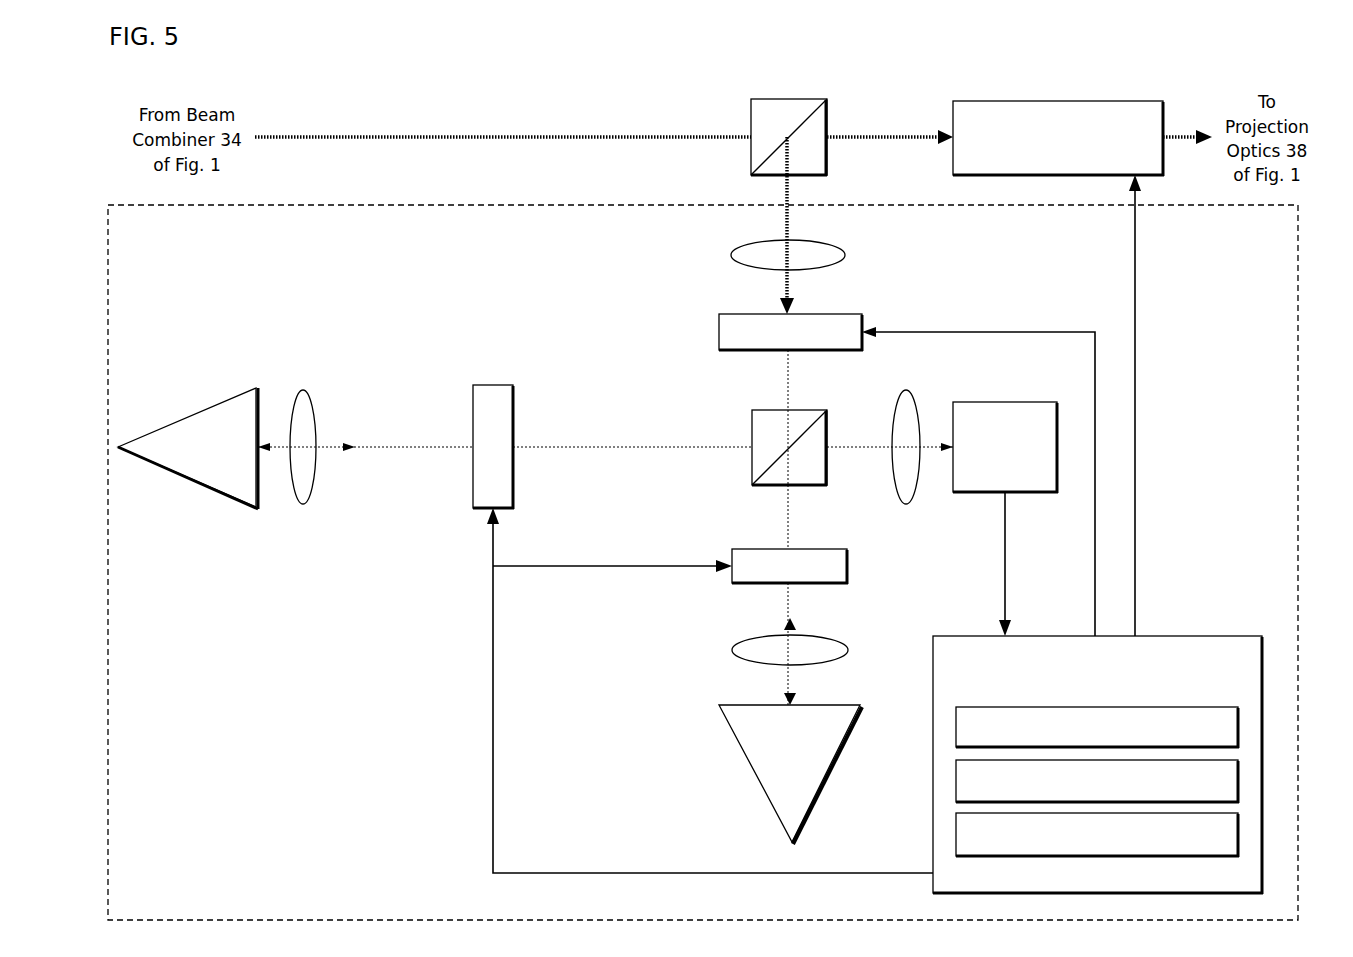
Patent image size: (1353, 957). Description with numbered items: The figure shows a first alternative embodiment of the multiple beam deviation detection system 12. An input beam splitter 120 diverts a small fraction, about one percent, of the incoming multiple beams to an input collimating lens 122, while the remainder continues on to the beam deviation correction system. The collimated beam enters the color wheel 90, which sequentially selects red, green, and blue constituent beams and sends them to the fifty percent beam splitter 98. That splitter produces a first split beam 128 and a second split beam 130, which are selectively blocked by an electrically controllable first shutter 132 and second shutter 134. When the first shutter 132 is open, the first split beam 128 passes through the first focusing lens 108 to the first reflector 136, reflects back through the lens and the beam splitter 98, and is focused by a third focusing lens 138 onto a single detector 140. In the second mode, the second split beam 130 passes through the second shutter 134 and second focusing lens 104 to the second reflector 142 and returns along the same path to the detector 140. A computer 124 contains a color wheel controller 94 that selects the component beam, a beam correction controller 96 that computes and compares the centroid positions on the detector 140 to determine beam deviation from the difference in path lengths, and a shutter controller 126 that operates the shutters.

The multiple beam deviation detection system 12 is at (398, 200).
The input beam splitter 120 is at (775, 99).
The input collimating lens 122 is at (742, 245).
The color wheel 90 is at (1000, 101).
The 50% beam splitter 98 is at (765, 410).
The first split beam 128 is at (648, 447).
The second split beam 130 is at (788, 518).
The first shutter 132 is at (492, 385).
The second shutter 134 is at (745, 549).
The first reflector 136 is at (238, 388).
The first focusing lens 108 is at (305, 392).
The third focusing lens 138 is at (896, 402).
The detector 140 is at (1003, 402).
The second focusing lens 104 is at (745, 637).
The second reflector 142 is at (740, 705).
The computer 124 is at (965, 634).
The color wheel controller 94 is at (1012, 707).
The beam correction controller 96 is at (953, 782).
The shutter controller 126 is at (953, 833).